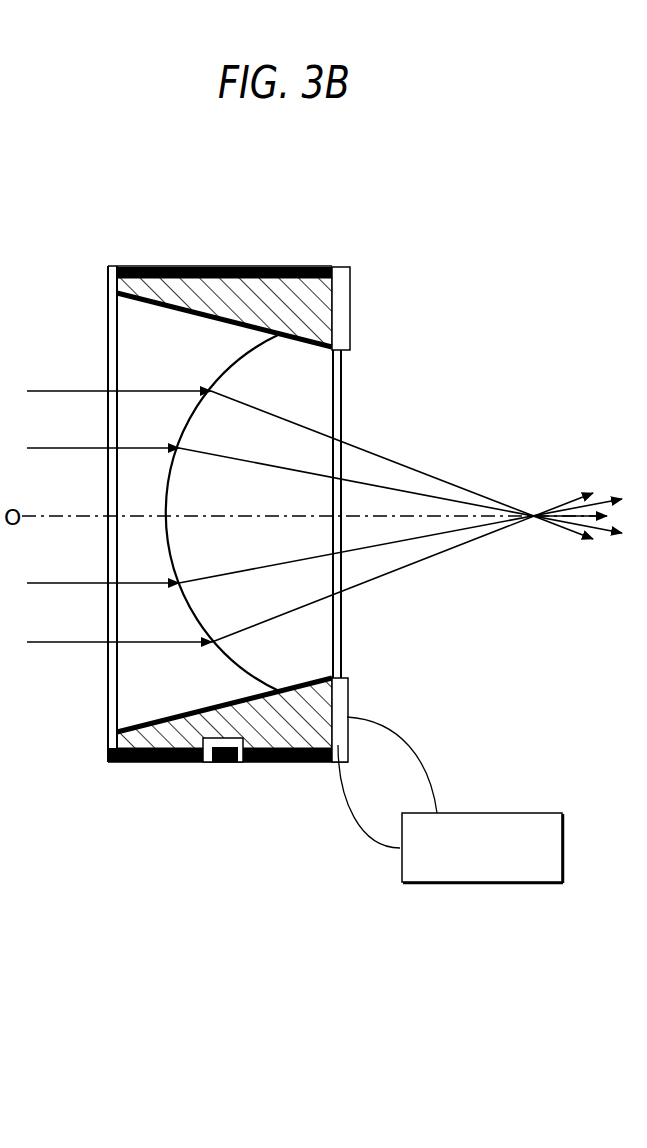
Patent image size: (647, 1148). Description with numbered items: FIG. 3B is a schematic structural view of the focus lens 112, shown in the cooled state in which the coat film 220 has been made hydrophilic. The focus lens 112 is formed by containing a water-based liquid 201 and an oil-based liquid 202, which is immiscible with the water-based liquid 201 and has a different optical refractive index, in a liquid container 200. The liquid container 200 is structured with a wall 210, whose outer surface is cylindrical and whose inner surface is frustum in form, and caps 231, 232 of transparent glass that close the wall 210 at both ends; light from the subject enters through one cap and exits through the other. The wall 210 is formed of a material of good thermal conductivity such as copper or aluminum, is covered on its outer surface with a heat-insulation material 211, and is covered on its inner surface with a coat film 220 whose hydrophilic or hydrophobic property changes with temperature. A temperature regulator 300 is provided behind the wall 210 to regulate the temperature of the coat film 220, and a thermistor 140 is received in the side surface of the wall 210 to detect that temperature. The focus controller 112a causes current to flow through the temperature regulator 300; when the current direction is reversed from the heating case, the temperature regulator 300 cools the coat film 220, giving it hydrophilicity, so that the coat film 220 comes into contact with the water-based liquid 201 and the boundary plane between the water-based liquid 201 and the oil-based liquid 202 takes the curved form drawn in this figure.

The focus lens 112 is at (454, 249).
The focus controller 112a is at (498, 883).
The thermistor 140 is at (224, 763).
The liquid container 200 is at (109, 344).
The water-based liquid 201 is at (150, 701).
The oil-based liquid 202 is at (307, 630).
The wall 210 is at (272, 300).
The heat-insulation material 211 is at (283, 763).
The coat film 220 is at (150, 763).
The cap 231 is at (112, 667).
The cap 232 is at (335, 660).
The temperature regulator 300 is at (343, 292).